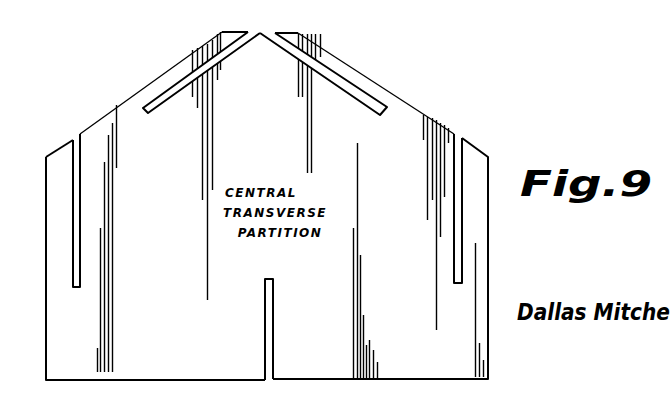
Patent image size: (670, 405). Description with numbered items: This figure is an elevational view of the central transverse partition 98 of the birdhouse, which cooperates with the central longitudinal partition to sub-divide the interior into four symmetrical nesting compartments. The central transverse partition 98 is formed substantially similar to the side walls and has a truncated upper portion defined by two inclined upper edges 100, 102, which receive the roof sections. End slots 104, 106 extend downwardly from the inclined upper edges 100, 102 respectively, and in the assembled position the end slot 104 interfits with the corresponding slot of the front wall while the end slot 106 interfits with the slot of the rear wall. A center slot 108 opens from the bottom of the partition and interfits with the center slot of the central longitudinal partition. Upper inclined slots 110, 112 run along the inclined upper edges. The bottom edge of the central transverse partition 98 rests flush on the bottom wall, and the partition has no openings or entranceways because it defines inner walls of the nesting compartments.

The central transverse partition 98 is at (408, 125).
The inclined upper edge 100 is at (352, 67).
The inclined upper edge 102 is at (118, 105).
The end slot 104 is at (453, 257).
The end slot 106 is at (82, 267).
The center slot 108 is at (273, 310).
The upper inclined slot 110 is at (353, 96).
The upper inclined slot 112 is at (168, 100).